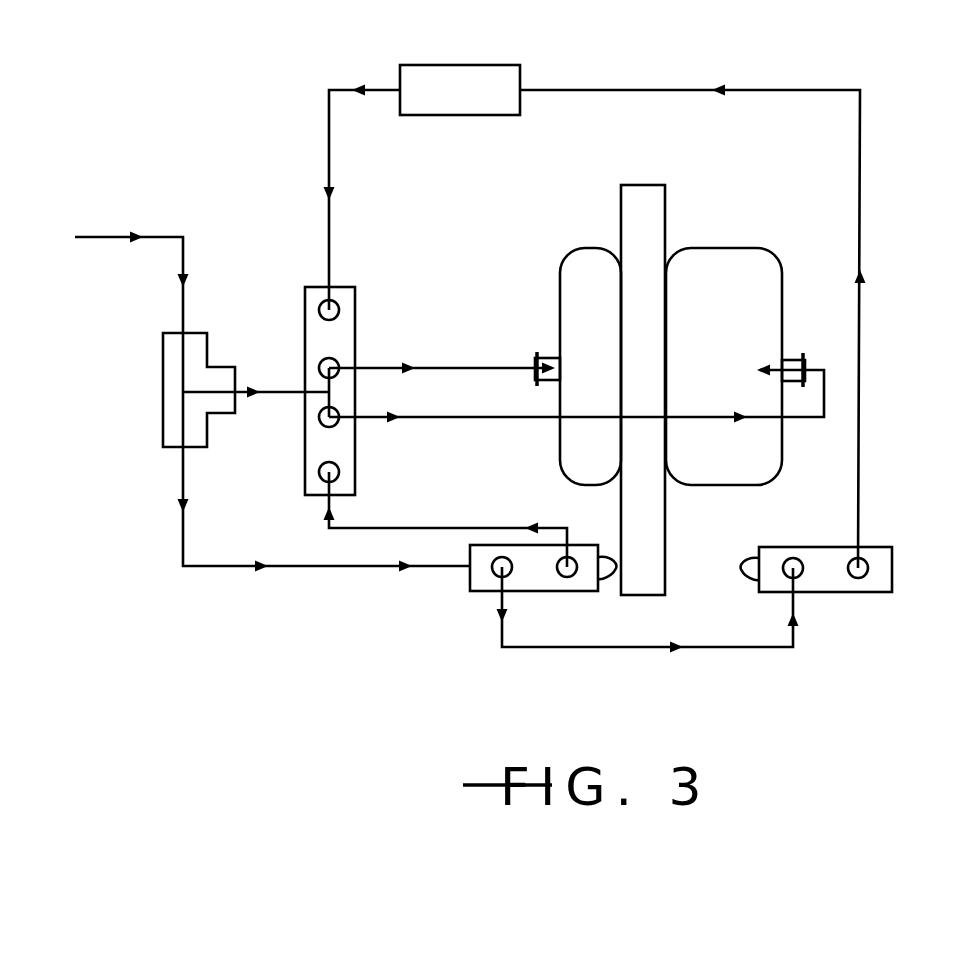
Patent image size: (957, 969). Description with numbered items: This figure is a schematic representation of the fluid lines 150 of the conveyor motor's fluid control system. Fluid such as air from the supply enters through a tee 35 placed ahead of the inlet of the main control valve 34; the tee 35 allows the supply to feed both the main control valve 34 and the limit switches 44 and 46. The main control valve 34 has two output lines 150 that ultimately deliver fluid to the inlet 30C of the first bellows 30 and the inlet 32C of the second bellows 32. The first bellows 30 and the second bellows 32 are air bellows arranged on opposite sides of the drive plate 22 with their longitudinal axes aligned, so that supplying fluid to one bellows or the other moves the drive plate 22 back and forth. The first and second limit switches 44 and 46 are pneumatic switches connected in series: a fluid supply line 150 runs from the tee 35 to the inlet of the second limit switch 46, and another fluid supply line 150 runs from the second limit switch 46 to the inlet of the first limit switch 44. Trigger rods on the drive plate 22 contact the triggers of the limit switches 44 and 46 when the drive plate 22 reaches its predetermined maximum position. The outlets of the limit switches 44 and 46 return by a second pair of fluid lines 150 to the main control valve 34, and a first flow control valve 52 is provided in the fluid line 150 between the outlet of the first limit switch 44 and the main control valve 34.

The drive plate 22 is at (652, 203).
The first bellows 30 is at (740, 248).
The inlet of first bellows 30C is at (798, 360).
The second bellows 32 is at (572, 265).
The inlet of second bellows 32C is at (540, 358).
The main control valve 34 is at (355, 302).
The tee 35 is at (167, 373).
The first limit switch 44 is at (825, 583).
The second limit switch 46 is at (470, 578).
The first flow control valve 52 is at (458, 78).
The fluid lines 150 is at (430, 420).